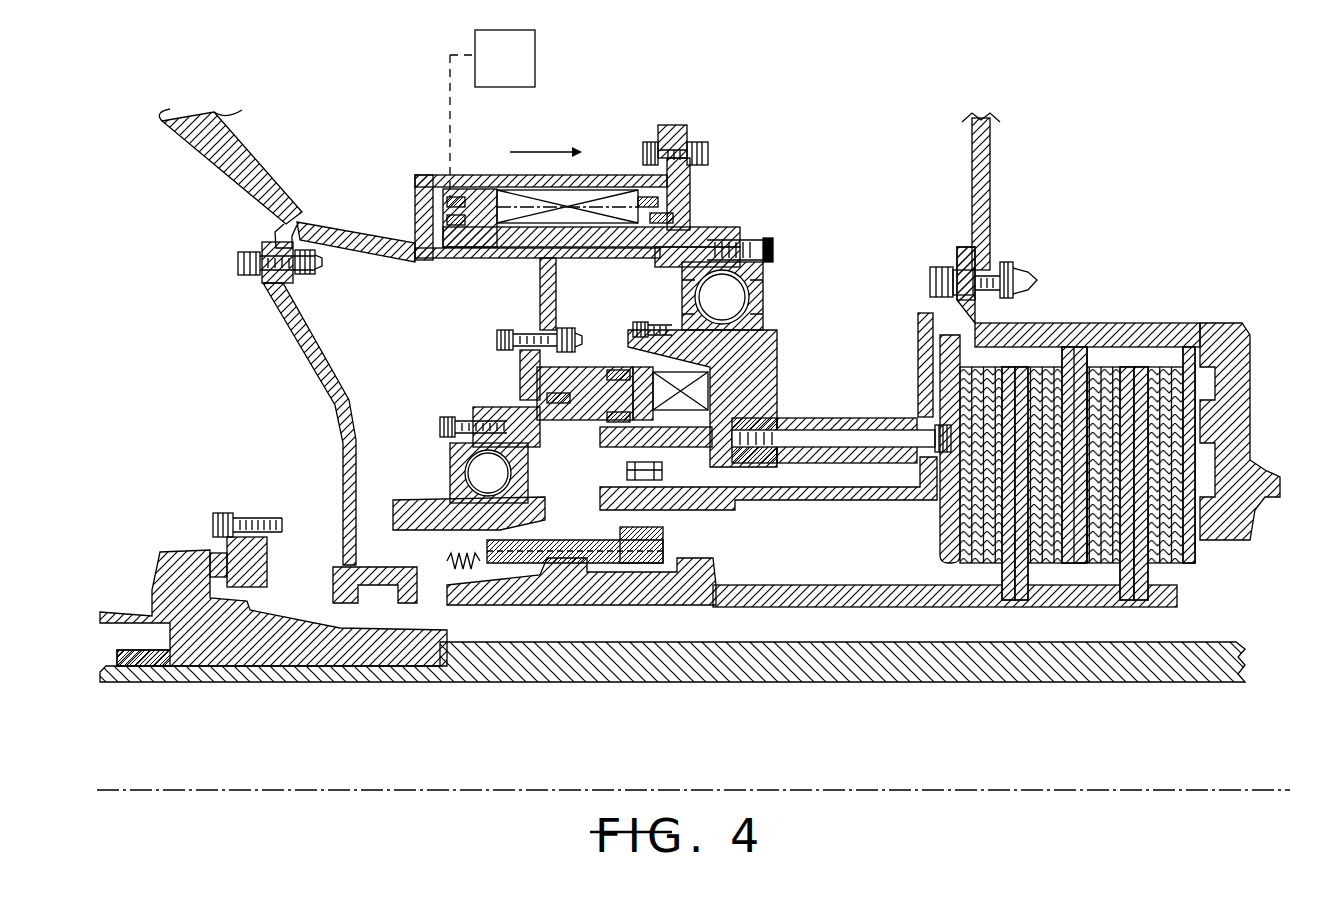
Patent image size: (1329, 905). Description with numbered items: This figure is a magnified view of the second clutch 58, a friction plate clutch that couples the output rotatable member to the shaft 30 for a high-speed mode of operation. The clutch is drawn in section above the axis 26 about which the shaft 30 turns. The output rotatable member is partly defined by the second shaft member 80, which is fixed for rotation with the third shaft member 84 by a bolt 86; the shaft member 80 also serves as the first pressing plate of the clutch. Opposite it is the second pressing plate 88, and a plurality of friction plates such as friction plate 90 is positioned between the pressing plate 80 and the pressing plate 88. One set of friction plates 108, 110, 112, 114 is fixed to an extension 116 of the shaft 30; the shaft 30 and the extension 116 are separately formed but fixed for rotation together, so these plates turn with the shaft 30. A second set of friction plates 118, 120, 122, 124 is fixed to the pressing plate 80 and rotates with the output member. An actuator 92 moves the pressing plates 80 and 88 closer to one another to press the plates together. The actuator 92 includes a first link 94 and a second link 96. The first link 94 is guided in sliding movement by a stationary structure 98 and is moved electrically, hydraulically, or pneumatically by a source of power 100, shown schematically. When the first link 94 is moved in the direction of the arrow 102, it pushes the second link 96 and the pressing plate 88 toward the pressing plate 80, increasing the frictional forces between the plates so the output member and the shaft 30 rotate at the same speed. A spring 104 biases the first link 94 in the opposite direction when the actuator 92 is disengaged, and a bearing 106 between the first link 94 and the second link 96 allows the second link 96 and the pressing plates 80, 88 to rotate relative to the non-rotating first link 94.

The axis of rotation 26 is at (335, 792).
The shaft 30 is at (450, 660).
The second clutch 58 is at (1130, 222).
The second shaft member 80 is at (1240, 368).
The third shaft member 84 is at (992, 148).
The bolt 86 is at (1010, 262).
The second pressing plate 88 is at (938, 550).
The friction plate 90 is at (1000, 600).
The actuator 92 is at (778, 168).
The first link 94 is at (487, 262).
The second link 96 is at (775, 372).
The stationary structure 98 is at (415, 178).
The source of power 100 is at (537, 52).
The arrow 102 is at (543, 150).
The spring 104 is at (600, 190).
The bearing 106 is at (774, 282).
The friction plate 108 is at (1020, 600).
The friction plate 110 is at (1008, 600).
The friction plate 112 is at (1127, 600).
The friction plate 114 is at (1142, 600).
The extension 116 is at (568, 590).
The friction plate 118 is at (962, 320).
The friction plate 120 is at (1068, 340).
The friction plate 122 is at (1085, 345).
The friction plate 124 is at (1187, 345).